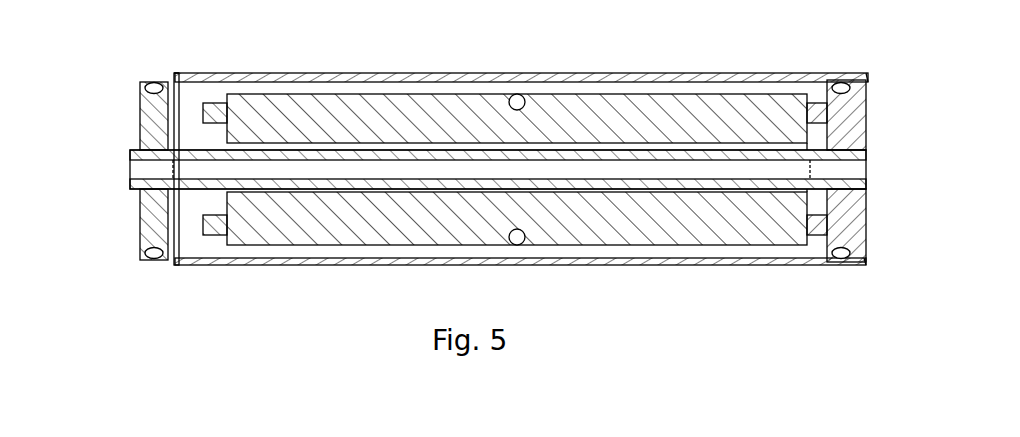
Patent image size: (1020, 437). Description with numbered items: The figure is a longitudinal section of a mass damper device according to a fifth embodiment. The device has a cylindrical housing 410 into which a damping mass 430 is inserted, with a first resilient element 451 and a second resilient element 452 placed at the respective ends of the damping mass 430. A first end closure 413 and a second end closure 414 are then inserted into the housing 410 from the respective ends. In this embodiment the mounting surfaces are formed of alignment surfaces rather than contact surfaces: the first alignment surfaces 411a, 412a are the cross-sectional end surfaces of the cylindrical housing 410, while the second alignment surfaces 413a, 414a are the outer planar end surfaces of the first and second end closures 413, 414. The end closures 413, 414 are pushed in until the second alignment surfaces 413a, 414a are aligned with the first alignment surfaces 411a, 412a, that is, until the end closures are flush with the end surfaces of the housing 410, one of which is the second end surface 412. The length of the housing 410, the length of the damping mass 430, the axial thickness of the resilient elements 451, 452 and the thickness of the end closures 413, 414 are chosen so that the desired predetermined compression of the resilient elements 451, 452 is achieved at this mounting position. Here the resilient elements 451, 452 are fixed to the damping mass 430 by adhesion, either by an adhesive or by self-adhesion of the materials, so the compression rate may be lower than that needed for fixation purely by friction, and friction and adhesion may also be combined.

The cylindrical housing 410 is at (412, 73).
The first alignment surface 411a is at (177, 73).
The second end surface of the housing 412 is at (866, 265).
The first alignment surface 412a is at (868, 77).
The first end closure 413 is at (137, 213).
The second alignment surface 413a is at (141, 108).
The second end closure 414 is at (869, 213).
The second alignment surface 414a is at (897, 100).
The damping mass 430 is at (587, 95).
The first resilient element 451 is at (210, 235).
The second resilient element 452 is at (815, 235).